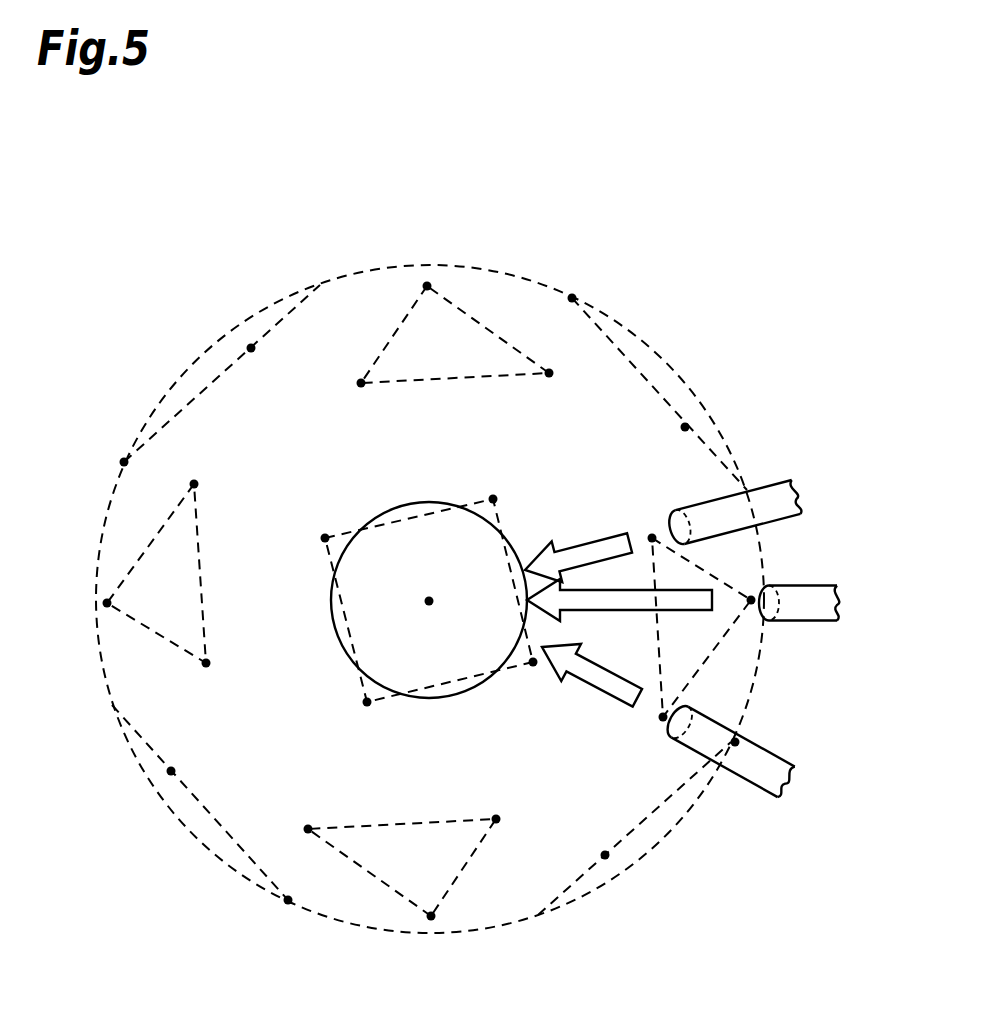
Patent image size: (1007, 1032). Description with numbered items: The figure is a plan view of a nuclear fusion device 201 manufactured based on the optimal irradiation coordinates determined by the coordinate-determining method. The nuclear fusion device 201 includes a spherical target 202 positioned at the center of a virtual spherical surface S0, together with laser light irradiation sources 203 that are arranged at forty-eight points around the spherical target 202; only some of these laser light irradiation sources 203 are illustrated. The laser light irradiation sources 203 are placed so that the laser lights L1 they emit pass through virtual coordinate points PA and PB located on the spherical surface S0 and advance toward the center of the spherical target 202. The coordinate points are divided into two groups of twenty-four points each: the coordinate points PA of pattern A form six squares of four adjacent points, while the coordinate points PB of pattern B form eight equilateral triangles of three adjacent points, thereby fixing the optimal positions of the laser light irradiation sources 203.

The nuclear fusion device 201 is at (692, 180).
The spherical target 202 is at (425, 502).
The laser light irradiation sources 203 is at (775, 478).
The virtual spherical surface S0 is at (502, 272).
The coordinate points of pattern A PA is at (251, 348).
The coordinate points of pattern B PB is at (427, 286).
The laser lights L1 is at (613, 590).